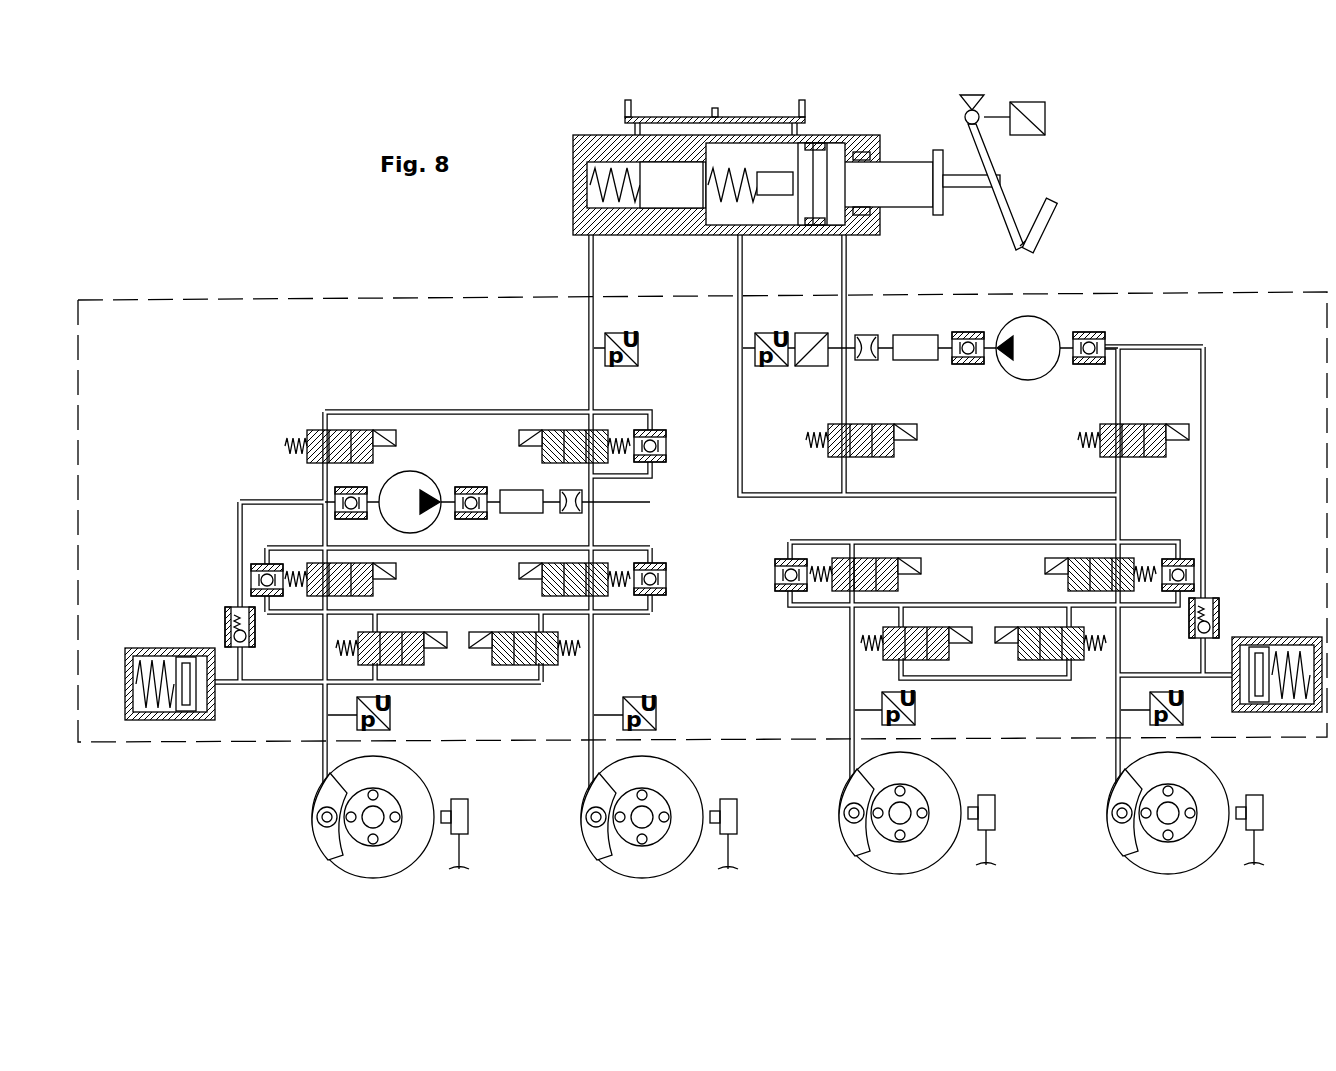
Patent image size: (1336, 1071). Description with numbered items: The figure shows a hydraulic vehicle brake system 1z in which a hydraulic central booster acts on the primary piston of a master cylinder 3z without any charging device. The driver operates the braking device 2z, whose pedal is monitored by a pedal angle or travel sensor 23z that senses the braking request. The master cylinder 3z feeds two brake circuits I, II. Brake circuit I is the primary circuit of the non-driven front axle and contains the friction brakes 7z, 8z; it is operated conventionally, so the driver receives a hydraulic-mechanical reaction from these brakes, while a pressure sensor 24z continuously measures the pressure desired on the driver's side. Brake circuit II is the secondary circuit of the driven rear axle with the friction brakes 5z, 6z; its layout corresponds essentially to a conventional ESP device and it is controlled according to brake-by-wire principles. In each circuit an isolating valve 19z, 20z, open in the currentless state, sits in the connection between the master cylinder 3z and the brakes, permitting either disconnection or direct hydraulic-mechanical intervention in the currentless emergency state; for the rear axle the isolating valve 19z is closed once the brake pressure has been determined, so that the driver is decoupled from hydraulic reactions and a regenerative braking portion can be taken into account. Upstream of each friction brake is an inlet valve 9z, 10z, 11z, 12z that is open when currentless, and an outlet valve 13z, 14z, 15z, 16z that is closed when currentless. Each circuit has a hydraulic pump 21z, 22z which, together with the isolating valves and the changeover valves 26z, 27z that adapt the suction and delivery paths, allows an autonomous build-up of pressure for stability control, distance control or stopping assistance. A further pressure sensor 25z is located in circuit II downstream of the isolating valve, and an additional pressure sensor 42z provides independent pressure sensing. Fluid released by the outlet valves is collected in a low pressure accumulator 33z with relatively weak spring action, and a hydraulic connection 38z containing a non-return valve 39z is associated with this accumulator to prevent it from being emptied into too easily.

The brake system 1z is at (187, 241).
The braking device 2z is at (860, 118).
The master cylinder 3z is at (596, 145).
The hydraulic friction brake 5z is at (330, 840).
The hydraulic friction brake 6z is at (598, 838).
The hydraulic friction brake 7z is at (855, 835).
The hydraulic friction brake 8z is at (1125, 835).
The inlet valve 9z is at (398, 596).
The inlet valve 10z is at (540, 592).
The inlet valve 11z is at (898, 585).
The inlet valve 12z is at (1068, 585).
The outlet valve 13z is at (428, 656).
The outlet valve 14z is at (551, 664).
The outlet valve 15z is at (922, 660).
The outlet valve 16z is at (1075, 660).
The isolating valve 19z is at (577, 430).
The isolating valve 20z is at (895, 452).
The hydraulic pump 21z is at (415, 480).
The hydraulic pump 22z is at (1030, 368).
The pedal angle sensor or travel sensor 23z is at (1045, 118).
The pressure sensor 24z is at (808, 368).
The pressure sensor 25z is at (656, 712).
The changeover valve 26z is at (312, 430).
The changeover valve 27z is at (1138, 458).
The low pressure accumulator 33z is at (116, 710).
The hydraulic connection 38z is at (237, 593).
The non-return valve 39z is at (256, 628).
The pressure sensor 42z is at (622, 331).
The brake circuit I is at (1246, 751).
The brake circuit II is at (290, 756).